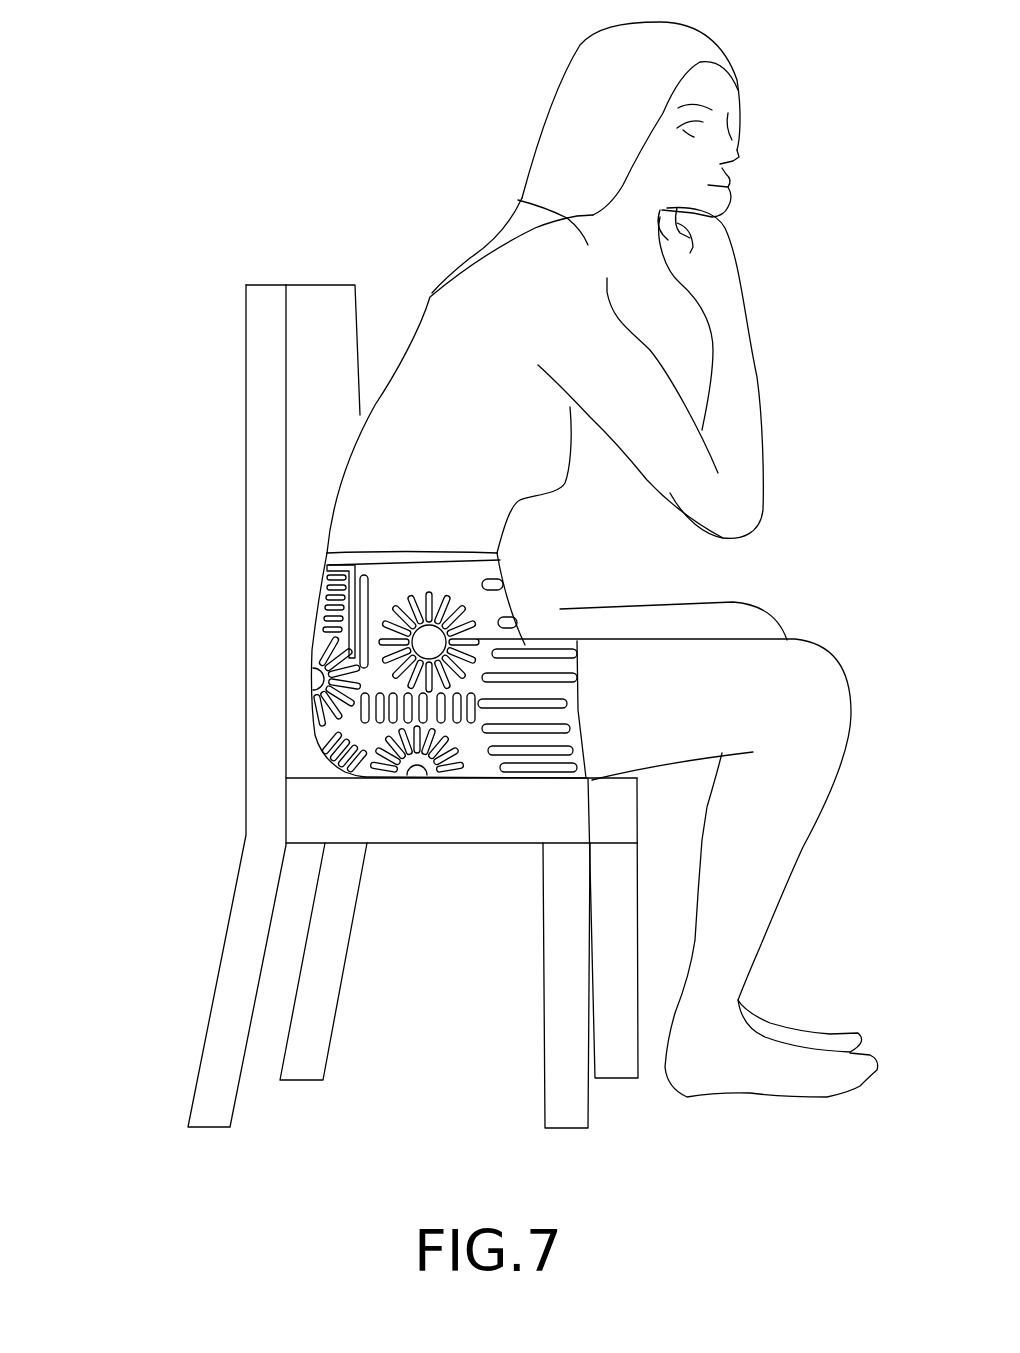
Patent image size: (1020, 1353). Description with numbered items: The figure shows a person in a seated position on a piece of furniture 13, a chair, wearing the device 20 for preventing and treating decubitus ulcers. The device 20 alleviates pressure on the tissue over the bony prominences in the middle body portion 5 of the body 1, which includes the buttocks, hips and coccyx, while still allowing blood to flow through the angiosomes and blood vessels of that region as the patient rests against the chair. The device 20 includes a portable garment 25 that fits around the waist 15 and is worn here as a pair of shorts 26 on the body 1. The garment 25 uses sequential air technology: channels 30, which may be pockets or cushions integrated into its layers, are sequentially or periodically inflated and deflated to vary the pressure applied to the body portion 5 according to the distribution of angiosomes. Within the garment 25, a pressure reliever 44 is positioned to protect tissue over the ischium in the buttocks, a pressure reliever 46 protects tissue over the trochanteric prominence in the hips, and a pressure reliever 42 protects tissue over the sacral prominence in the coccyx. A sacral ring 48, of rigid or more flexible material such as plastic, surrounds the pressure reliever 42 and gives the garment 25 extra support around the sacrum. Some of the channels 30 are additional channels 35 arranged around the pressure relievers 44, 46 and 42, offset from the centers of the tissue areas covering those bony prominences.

The body 1 is at (518, 200).
The body portion 5 is at (585, 558).
The piece of furniture 13 is at (313, 368).
The waist 15 is at (337, 553).
The device 20 is at (268, 614).
The garment 25 is at (480, 777).
The pair of shorts 26 is at (528, 777).
The channels 30 is at (432, 597).
The additional channels 35 is at (380, 628).
The sacral pressure reliever 42 is at (317, 683).
The ischial pressure reliever 44 is at (413, 775).
The trochanteric pressure reliever 46 is at (427, 640).
The sacral ring 48 is at (314, 690).